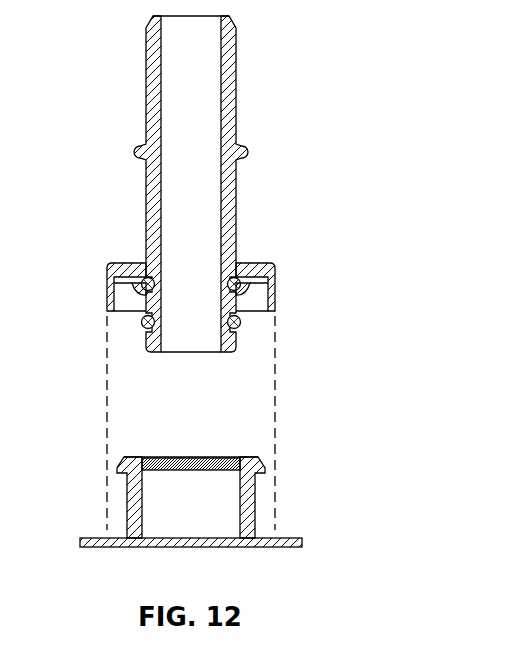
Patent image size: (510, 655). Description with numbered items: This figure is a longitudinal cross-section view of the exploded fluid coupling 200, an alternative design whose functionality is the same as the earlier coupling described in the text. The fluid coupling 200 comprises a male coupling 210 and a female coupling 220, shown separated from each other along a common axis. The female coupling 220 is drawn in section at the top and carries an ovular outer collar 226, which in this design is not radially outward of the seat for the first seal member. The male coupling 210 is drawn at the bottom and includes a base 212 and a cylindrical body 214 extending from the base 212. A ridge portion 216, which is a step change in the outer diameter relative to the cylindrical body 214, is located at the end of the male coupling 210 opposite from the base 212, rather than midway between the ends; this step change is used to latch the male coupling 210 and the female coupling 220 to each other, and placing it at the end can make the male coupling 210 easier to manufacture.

The fluid coupling 200 is at (351, 230).
The female coupling 220 is at (133, 192).
The ovular outer collar 226 is at (108, 293).
The male coupling 210 is at (282, 478).
The ridge portion 216 is at (122, 472).
The cylindrical body 214 is at (128, 515).
The base 212 is at (284, 538).